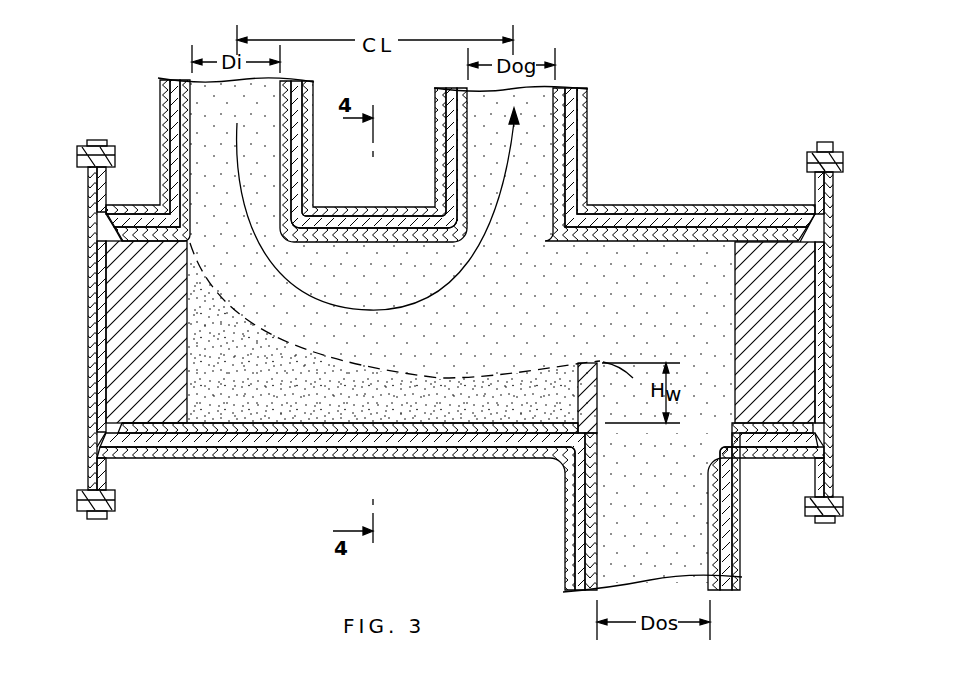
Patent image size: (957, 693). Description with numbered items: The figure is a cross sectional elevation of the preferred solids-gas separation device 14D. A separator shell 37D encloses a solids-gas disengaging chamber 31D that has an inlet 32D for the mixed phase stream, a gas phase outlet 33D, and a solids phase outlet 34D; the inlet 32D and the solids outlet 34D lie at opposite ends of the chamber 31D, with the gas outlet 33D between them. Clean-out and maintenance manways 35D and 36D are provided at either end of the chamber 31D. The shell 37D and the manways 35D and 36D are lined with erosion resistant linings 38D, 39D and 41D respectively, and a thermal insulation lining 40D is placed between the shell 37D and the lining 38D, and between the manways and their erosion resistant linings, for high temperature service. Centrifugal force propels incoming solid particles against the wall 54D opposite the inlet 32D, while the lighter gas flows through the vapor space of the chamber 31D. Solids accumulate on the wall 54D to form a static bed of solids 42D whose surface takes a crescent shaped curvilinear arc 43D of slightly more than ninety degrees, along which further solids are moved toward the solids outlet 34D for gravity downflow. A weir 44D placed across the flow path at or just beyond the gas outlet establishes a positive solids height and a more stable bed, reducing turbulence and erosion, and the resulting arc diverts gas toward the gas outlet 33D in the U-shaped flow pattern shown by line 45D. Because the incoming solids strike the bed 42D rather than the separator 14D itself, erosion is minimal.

The solids-gas separation device 14D is at (716, 100).
The solids-gas disengaging chamber 31D is at (402, 285).
The inlet 32D is at (200, 92).
The gas phase outlet 33D is at (537, 110).
The solids phase outlet 34D is at (680, 583).
The clean-out and maintenance manway 35D is at (92, 372).
The clean-out and maintenance manway 36D is at (827, 474).
The separator shell 37D is at (326, 207).
The erosion resistant lining 38D is at (372, 228).
The erosion resistant lining 39D is at (130, 307).
The thermal insulation lining 40D is at (600, 217).
The erosion resistant lining 41D is at (797, 318).
The static bed of solids 42D is at (385, 413).
The curvilinear arc 43D is at (457, 378).
The weir 44D is at (590, 408).
The gas flow pattern line 45D is at (483, 270).
The wall 54D is at (313, 425).